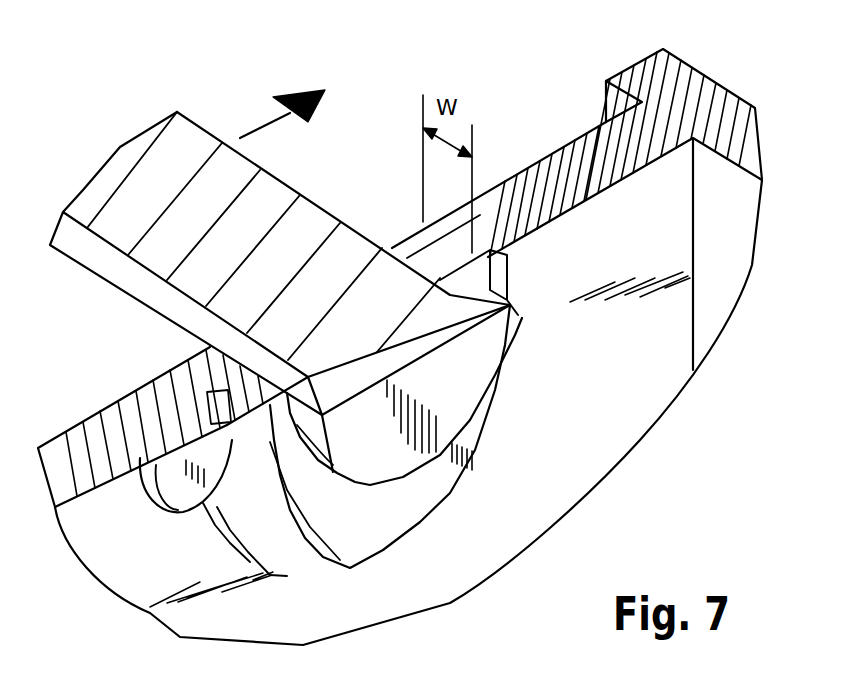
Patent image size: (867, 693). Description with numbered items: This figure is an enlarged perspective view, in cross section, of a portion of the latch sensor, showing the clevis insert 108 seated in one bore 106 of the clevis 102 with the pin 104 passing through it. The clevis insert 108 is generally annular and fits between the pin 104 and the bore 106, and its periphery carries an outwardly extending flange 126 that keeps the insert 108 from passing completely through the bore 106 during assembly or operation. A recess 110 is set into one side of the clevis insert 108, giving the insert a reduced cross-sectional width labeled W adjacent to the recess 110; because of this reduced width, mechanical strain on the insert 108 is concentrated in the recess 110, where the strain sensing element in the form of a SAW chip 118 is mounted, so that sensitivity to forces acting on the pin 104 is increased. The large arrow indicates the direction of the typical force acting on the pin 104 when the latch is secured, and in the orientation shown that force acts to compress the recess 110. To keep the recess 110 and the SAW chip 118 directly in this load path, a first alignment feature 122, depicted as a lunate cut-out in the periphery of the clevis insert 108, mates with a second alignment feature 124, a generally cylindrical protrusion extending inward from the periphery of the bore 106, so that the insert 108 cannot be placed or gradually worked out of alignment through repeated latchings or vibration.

The clevis 102 is at (713, 40).
The pin 104 is at (383, 460).
The bore 106 is at (343, 560).
The clevis insert 108 is at (490, 413).
The recess 110 is at (495, 270).
The SAW chip 118 is at (510, 305).
The first alignment feature 122 is at (167, 383).
The second alignment feature 124 is at (108, 412).
The flange 126 is at (247, 537).